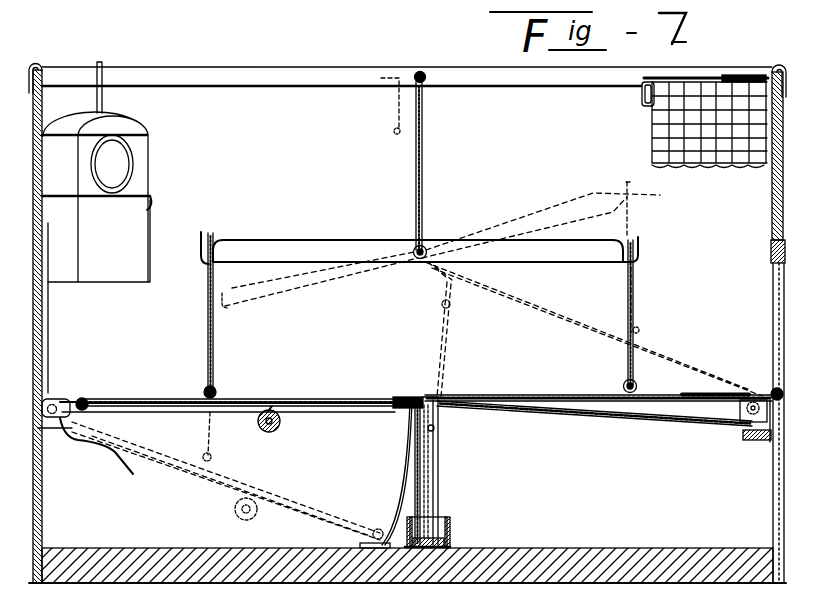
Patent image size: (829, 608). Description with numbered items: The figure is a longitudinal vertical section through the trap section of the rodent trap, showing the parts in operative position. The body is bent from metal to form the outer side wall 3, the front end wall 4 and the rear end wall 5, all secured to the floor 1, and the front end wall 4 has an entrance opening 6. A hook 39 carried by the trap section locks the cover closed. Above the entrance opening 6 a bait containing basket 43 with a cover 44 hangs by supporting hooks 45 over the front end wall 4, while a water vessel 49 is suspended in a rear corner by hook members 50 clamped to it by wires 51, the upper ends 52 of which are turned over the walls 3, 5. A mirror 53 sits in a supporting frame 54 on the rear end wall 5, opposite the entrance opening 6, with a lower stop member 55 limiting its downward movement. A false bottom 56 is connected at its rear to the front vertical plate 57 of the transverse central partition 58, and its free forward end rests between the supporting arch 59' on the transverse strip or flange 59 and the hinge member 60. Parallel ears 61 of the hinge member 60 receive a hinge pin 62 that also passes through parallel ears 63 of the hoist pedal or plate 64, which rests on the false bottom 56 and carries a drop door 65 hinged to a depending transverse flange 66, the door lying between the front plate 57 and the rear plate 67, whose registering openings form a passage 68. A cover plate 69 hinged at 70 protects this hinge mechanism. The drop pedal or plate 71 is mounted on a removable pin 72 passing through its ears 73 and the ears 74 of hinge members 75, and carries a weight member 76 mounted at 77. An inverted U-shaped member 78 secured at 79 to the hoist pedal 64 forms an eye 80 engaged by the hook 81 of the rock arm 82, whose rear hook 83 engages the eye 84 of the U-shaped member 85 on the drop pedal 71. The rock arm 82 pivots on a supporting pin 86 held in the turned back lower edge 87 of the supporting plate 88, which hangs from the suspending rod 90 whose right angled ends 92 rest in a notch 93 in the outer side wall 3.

The floor of the trap section 1 is at (695, 585).
The outer side wall 3 is at (328, 139).
The front end wall 4 is at (779, 520).
The rear end wall 5 is at (38, 515).
The entrance opening 6 is at (779, 268).
The hook 39 is at (422, 115).
The bait containing basket 43 is at (652, 127).
The cover 44 is at (692, 78).
The supporting hooks 45 is at (776, 67).
The water vessel 49 is at (140, 163).
The hook members 50 is at (108, 76).
The wires 51 is at (154, 205).
The upper ends of the hook supporting members 52 is at (105, 61).
The mirror 53 is at (47, 333).
The supporting frame 54 is at (52, 382).
The lower stop member 55 is at (77, 390).
The false bottom 56 is at (562, 413).
The front vertical plate 57 is at (438, 442).
The transverse central partition 58 is at (442, 500).
The transverse strip or flange 59 is at (736, 442).
The supporting arch 59' is at (699, 462).
The hinge member 60 is at (769, 440).
The parallel ears 61 is at (779, 380).
The hinge pin 62 is at (752, 393).
The parallel ears 63 is at (731, 407).
The hoist pedal or plate 64 is at (651, 410).
The drop door 65 is at (440, 362).
The depending transverse flange 66 is at (413, 420).
The rear plate 67 is at (410, 460).
The passage 68 is at (432, 513).
The cover plate 69 is at (692, 388).
The hinge of cover plate 70 is at (772, 387).
The drop pedal or plate 71 is at (303, 400).
The removable pin 72 is at (56, 422).
The parallel ears 73 is at (67, 430).
The ears 74 is at (106, 459).
The hinge members 75 is at (83, 400).
The weight member 76 is at (267, 433).
The weight mounting 77 is at (273, 405).
The U-shaped member 78 is at (632, 298).
The securing points of U-shaped member 79 is at (624, 385).
The eye 80 is at (634, 255).
The hook 81 is at (632, 197).
The rock arm 82 is at (463, 248).
The hook 83 is at (208, 232).
The eye 84 is at (213, 253).
The U-shaped member 85 is at (213, 337).
The supporting pin 86 is at (423, 247).
The turned back lower edge 87 is at (413, 254).
The supporting plate 88 is at (422, 158).
The suspending rod 90 is at (425, 73).
The right angled ends 92 is at (427, 78).
The notch 93 is at (421, 72).